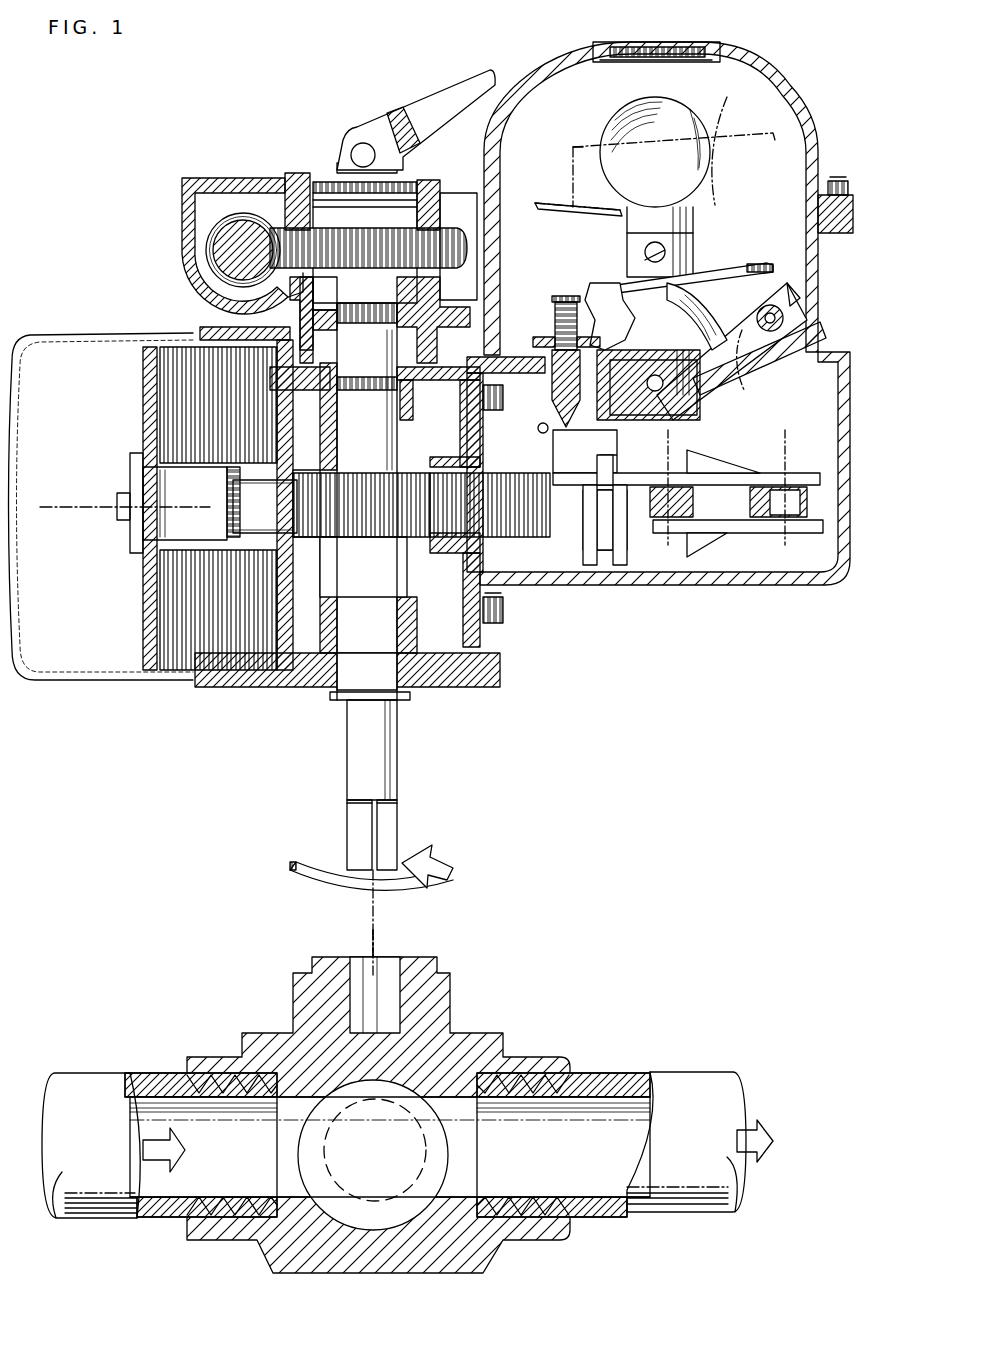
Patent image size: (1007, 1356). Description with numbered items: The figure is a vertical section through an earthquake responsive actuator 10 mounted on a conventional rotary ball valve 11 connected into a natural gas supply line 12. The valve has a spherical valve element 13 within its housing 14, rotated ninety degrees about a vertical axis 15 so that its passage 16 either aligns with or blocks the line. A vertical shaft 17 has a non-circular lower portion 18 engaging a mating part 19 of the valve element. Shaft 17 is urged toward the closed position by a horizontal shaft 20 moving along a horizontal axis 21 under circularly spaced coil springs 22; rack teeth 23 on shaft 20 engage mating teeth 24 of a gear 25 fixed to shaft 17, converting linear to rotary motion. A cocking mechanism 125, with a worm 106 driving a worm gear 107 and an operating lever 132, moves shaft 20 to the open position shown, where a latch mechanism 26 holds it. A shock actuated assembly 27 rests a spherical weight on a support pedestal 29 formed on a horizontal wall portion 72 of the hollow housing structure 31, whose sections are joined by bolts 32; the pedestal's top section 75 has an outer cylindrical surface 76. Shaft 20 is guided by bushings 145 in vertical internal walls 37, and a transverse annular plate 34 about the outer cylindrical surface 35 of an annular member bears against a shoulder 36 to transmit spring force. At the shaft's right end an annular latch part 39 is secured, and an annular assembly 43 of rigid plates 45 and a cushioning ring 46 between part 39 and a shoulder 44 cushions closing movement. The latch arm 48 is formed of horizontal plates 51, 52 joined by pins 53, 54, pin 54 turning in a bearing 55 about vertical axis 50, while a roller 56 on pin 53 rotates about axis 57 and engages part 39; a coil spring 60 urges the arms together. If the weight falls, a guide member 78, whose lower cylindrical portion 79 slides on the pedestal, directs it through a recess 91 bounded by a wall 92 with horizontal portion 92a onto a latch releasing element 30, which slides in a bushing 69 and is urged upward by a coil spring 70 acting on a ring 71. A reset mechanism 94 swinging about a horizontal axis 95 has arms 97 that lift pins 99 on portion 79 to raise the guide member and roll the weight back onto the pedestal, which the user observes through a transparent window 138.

The earthquake responsive actuator 10 is at (128, 198).
The rotary valve 11 is at (505, 1010).
The natural gas supply line 12 is at (88, 1080).
The spherical valve element 13 is at (363, 1203).
The valve housing 14 is at (490, 1262).
The vertical axis 15 is at (377, 917).
The passage 16 is at (350, 1222).
The shaft 17 is at (398, 764).
The lower portion of shaft 18 is at (398, 830).
The non-circular mating part 19 is at (365, 960).
The shaft 20 is at (295, 511).
The horizontal axis 21 is at (78, 510).
The coil springs 22 is at (180, 380).
The rack teeth 23 is at (540, 530).
The mating teeth 24 is at (320, 530).
The gear 25 is at (385, 555).
The latch mechanism 26 is at (715, 575).
The shock actuated assembly 27 is at (756, 182).
The support pedestal 29 is at (685, 243).
The latch releasing element 30 is at (552, 296).
The hollow housing structure 31 is at (815, 335).
The bolts 32 is at (840, 180).
The transverse annular plate 34 is at (143, 413).
The outer cylindrical surface 35 is at (185, 545).
The shoulder 36 is at (140, 460).
The vertical internal walls 37 is at (295, 430).
The annular latch part 39 is at (712, 460).
The annular assembly 43 is at (602, 556).
The shoulder 44 is at (600, 492).
The rigid plates 45 is at (590, 562).
The cushioning ring 46 is at (612, 460).
The arm 48 is at (740, 545).
The vertical axis 50 is at (788, 440).
The horizontal plate 51 is at (822, 480).
The horizontal plate 52 is at (825, 530).
The pin 53 is at (670, 565).
The pin 54 is at (795, 535).
The vertical bearing 55 is at (810, 505).
The roller 56 is at (690, 505).
The vertical axis 57 is at (670, 440).
The coil spring 60 is at (541, 424).
The bushing 69 is at (590, 345).
The coil spring 70 is at (553, 318).
The ring 71 is at (590, 295).
The horizontal wall portion 72 is at (772, 390).
The top section of pedestal 75 is at (595, 225).
The outer cylindrical surface 76 is at (690, 222).
The guide member 78 is at (768, 262).
The lower cylindrical portion 79 is at (695, 400).
The recess 91 is at (598, 282).
The wall 92 is at (537, 340).
The horizontal wall portion 92a is at (580, 200).
The reset mechanism 94 is at (790, 290).
The horizontal axis 95 is at (783, 315).
The arms 97 is at (723, 372).
The pins 99 is at (652, 376).
The worm 106 is at (218, 257).
The worm gear 107 is at (445, 240).
The cocking mechanism 125 is at (265, 177).
The operating lever 132 is at (442, 97).
The transparent window 138 is at (655, 46).
The bushings 145 is at (300, 470).